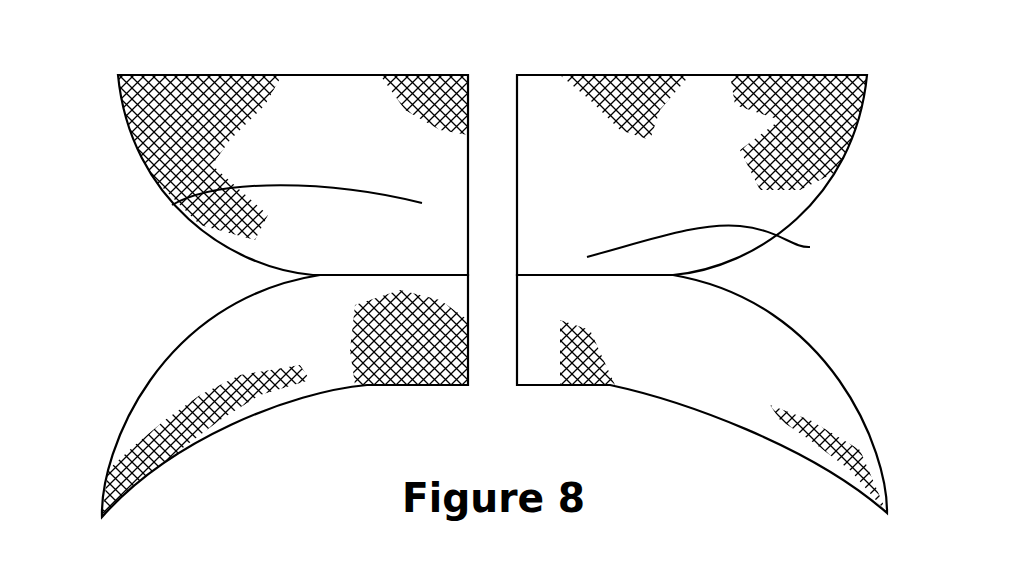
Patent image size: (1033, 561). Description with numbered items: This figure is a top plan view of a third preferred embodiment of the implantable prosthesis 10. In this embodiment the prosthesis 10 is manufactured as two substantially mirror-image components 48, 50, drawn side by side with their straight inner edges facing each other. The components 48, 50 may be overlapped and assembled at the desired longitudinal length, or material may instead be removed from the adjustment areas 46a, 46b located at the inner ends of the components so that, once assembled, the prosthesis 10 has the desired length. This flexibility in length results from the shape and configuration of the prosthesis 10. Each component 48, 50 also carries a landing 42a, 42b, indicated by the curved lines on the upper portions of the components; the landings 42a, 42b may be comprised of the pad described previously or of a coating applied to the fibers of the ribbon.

The implantable prosthesis 10 is at (172, 242).
The landing 42a is at (172, 205).
The landing 42b is at (810, 247).
The adjustment area 46a is at (470, 390).
The adjustment area 46b is at (593, 390).
The component 48 is at (186, 313).
The component 50 is at (802, 306).